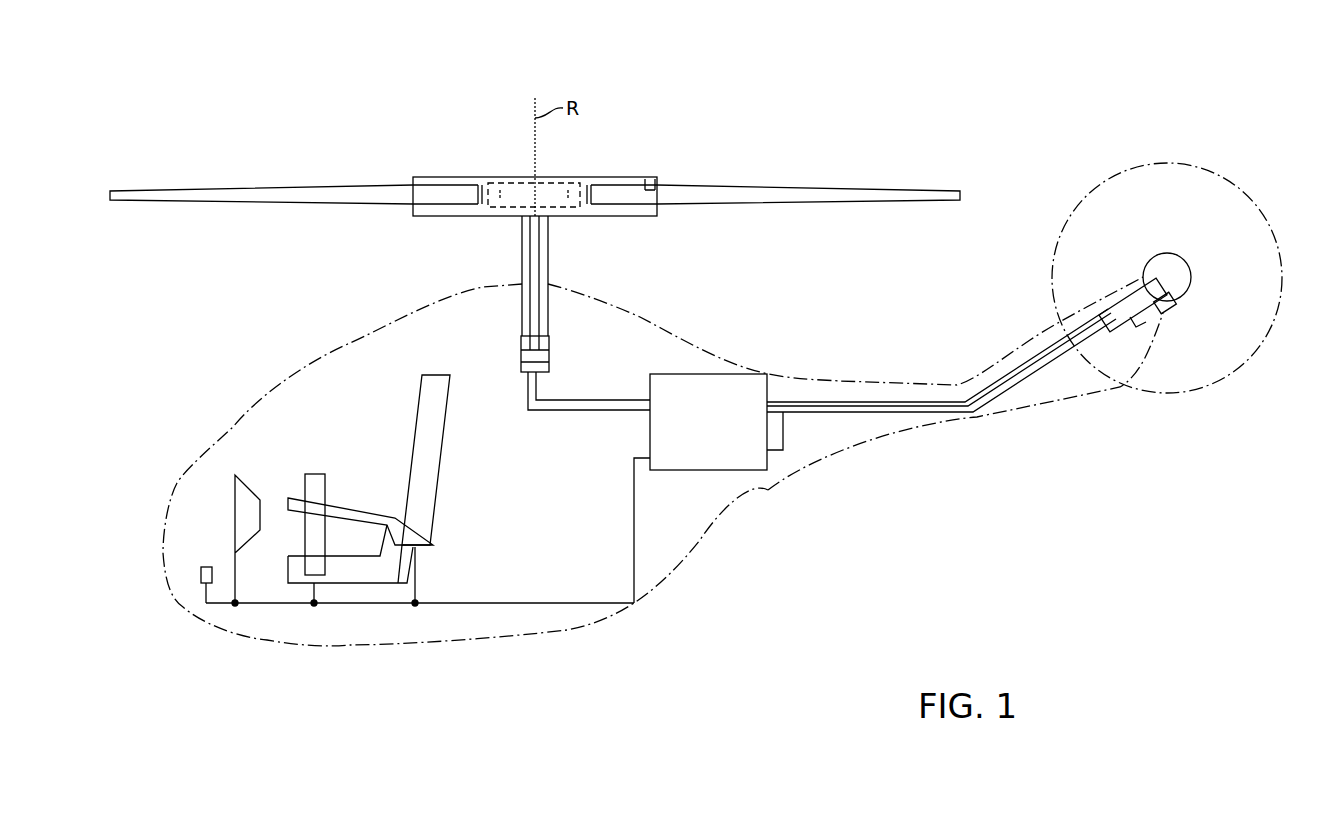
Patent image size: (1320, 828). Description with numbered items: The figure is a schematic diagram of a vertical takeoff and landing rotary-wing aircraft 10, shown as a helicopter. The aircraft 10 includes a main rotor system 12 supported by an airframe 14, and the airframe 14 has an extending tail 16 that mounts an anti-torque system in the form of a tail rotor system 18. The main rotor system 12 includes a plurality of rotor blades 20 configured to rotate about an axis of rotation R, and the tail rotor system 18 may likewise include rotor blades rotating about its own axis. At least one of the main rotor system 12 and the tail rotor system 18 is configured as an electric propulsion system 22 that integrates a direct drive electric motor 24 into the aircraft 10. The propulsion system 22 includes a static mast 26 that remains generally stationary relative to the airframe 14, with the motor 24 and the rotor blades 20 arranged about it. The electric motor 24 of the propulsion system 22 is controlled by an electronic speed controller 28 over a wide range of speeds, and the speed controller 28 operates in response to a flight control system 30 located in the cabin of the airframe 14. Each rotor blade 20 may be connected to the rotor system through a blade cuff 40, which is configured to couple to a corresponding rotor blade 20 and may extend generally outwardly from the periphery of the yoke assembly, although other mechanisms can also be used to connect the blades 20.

The rotary-wing aircraft 10 is at (320, 60).
The main rotor system 12 is at (506, 152).
The airframe 14 is at (663, 330).
The extending tail 16 is at (913, 427).
The tail rotor system 18 is at (1243, 187).
The rotor blades 20 is at (735, 188).
The electric propulsion system 22 is at (565, 232).
The direct drive electric motor 24 is at (545, 188).
The static mast 26 is at (522, 259).
The electronic speed controller 28 is at (770, 392).
The flight control system 30 is at (277, 470).
The blade cuff 40 is at (655, 178).